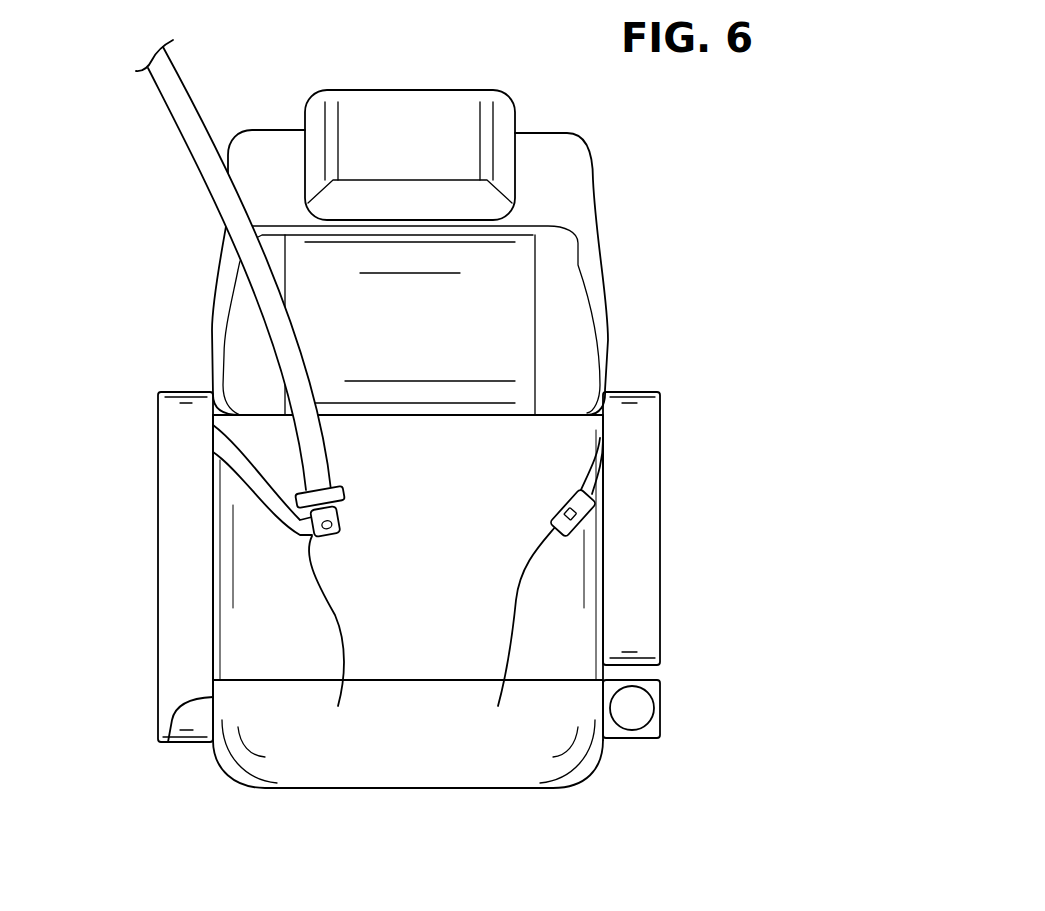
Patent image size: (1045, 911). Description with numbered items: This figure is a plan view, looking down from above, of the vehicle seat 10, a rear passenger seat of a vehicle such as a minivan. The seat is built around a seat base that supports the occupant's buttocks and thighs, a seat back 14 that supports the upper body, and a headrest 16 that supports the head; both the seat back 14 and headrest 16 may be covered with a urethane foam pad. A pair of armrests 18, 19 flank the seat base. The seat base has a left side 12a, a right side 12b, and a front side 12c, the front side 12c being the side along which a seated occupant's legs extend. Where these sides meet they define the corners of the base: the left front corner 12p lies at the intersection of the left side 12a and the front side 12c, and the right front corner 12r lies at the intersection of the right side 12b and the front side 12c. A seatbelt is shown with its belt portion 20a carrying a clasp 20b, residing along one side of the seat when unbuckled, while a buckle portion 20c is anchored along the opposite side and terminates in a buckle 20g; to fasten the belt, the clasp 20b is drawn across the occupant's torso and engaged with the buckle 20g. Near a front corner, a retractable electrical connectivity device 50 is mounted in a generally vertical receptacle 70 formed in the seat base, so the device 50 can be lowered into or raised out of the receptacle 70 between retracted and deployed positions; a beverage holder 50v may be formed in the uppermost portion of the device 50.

The vehicle seat 10 is at (689, 301).
The left side 12a is at (603, 672).
The right side 12b is at (170, 744).
The front side 12c is at (402, 791).
The left front corner 12p is at (590, 765).
The right front corner 12r is at (222, 760).
The seat back 14 is at (240, 134).
The headrest 16 is at (360, 90).
The armrest 18 is at (157, 575).
The armrest 19 is at (645, 578).
The belt portion 20a is at (214, 196).
The clasp 20b is at (326, 610).
The buckle portion 20c is at (595, 498).
The buckle 20g is at (512, 629).
The retractable electrical connectivity device 50 is at (632, 742).
The receptacle 70 is at (635, 764).
The beverage holder 50v is at (627, 720).